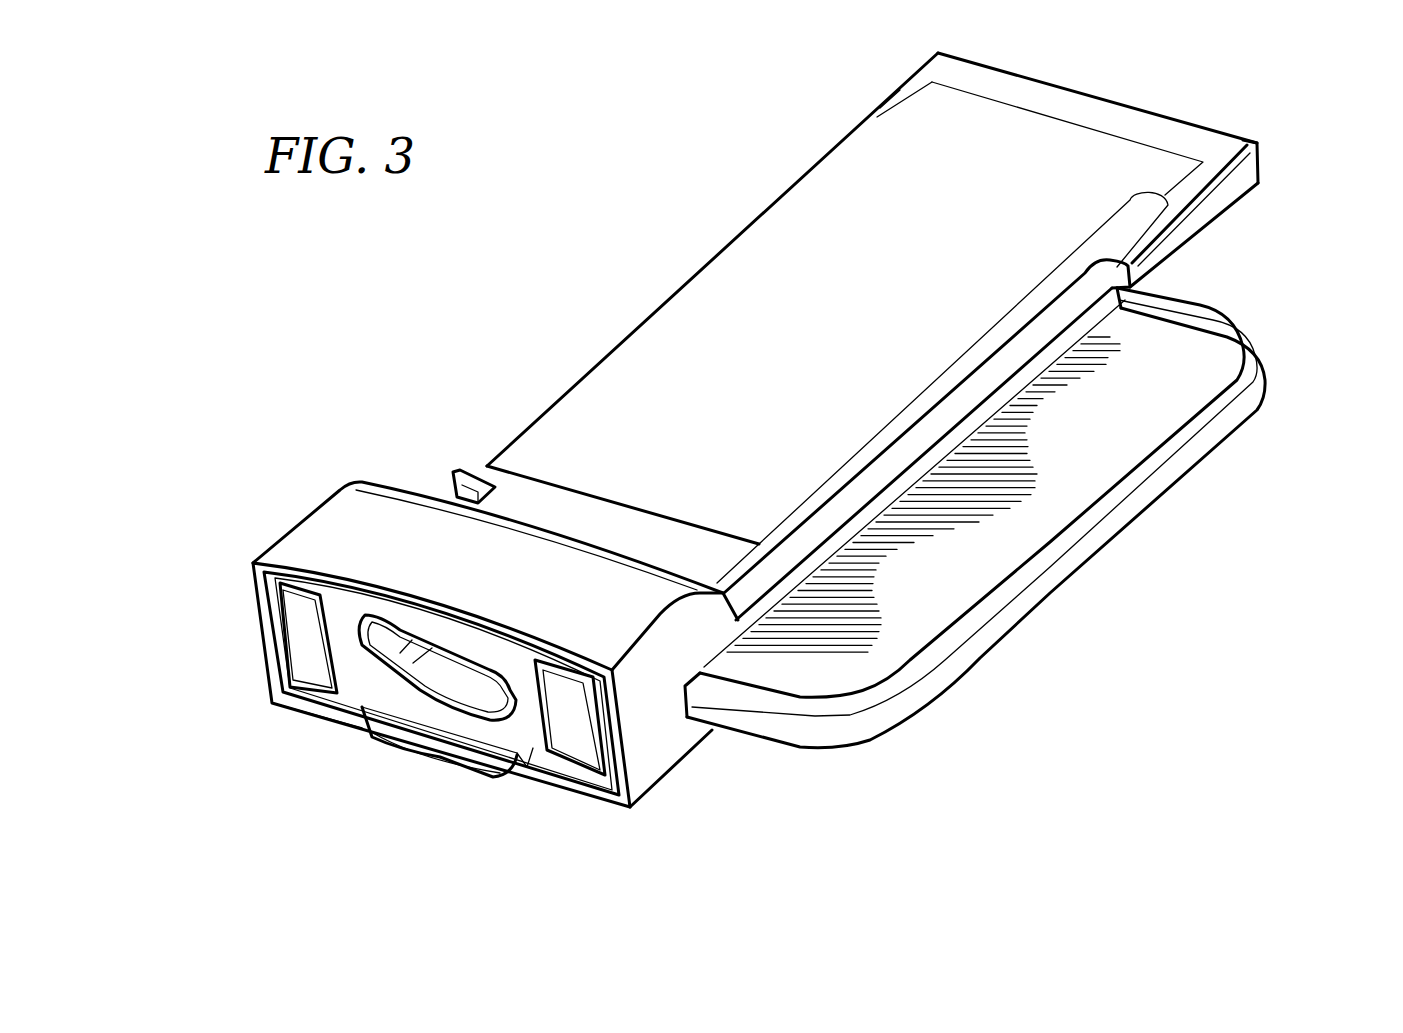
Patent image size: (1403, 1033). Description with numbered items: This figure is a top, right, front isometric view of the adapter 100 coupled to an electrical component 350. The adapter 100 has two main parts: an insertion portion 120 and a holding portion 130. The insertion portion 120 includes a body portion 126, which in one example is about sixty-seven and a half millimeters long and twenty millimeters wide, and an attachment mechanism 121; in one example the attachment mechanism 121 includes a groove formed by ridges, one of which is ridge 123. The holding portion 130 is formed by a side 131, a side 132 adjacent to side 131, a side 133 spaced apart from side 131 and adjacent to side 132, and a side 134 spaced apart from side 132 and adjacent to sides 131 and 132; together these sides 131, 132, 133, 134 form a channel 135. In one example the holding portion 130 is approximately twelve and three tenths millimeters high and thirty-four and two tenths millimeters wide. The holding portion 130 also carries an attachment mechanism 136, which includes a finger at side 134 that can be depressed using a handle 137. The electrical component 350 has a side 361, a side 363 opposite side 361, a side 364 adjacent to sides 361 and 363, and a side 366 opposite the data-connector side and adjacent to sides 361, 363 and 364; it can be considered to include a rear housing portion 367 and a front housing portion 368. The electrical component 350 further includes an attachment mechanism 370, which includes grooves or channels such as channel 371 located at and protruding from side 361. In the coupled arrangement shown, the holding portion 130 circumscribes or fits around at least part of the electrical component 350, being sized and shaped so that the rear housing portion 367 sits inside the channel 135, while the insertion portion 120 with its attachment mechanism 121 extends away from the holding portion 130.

The adapter 100 is at (428, 781).
The insertion portion 120 is at (1130, 510).
The attachment mechanism 121 is at (917, 455).
The ridge 123 is at (1112, 265).
The body portion 126 is at (926, 585).
The holding portion 130 is at (242, 599).
The side 131 is at (663, 743).
The side 132 is at (390, 517).
The side 133 is at (262, 622).
The side 134 is at (350, 728).
The channel 135 is at (573, 783).
The attachment mechanism 136 is at (527, 770).
The handle 137 is at (427, 745).
The electrical component 350 is at (763, 183).
The side 361 is at (1203, 210).
The side 363 is at (685, 315).
The side 364 is at (827, 152).
The side 366 is at (540, 742).
The rear housing portion 367 is at (295, 688).
The front housing portion 368 is at (1022, 118).
The attachment mechanism 370 is at (1258, 205).
The channel 371 is at (1232, 157).